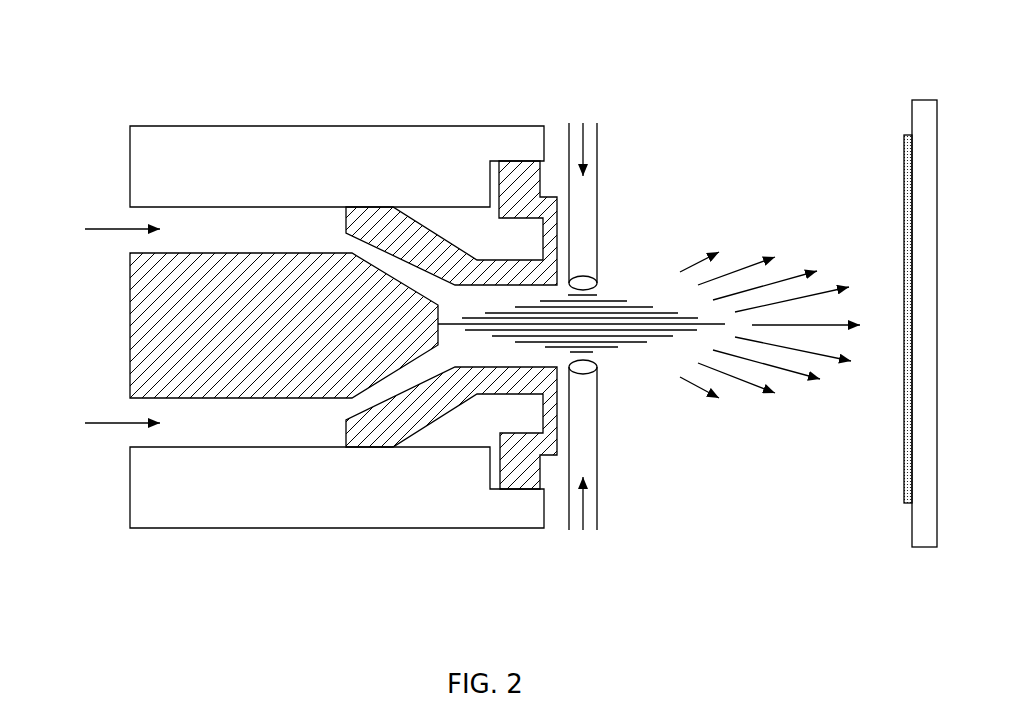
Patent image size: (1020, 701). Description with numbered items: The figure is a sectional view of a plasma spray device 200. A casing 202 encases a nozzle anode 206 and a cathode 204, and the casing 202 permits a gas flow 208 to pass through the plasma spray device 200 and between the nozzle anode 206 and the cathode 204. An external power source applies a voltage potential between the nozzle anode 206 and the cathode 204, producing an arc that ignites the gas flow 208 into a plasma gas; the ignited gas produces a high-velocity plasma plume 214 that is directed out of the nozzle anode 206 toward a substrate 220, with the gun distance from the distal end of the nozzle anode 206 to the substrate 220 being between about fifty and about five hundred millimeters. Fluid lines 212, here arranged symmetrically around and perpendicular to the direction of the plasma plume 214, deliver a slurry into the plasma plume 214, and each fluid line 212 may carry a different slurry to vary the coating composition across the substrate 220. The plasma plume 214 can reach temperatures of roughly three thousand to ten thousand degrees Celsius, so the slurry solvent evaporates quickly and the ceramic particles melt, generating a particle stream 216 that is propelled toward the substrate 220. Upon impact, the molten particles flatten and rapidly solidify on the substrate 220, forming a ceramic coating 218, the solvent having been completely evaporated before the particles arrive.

The plasma spray device 200 is at (135, 104).
The casing 202 is at (287, 126).
The cathode 204 is at (130, 338).
The nozzle anode 206 is at (398, 210).
The gas flow 208 is at (108, 229).
The fluid lines 212 is at (597, 172).
The plasma plume 214 is at (620, 310).
The particle stream 216 is at (795, 273).
The ceramic coating 218 is at (904, 186).
The substrate 220 is at (912, 108).